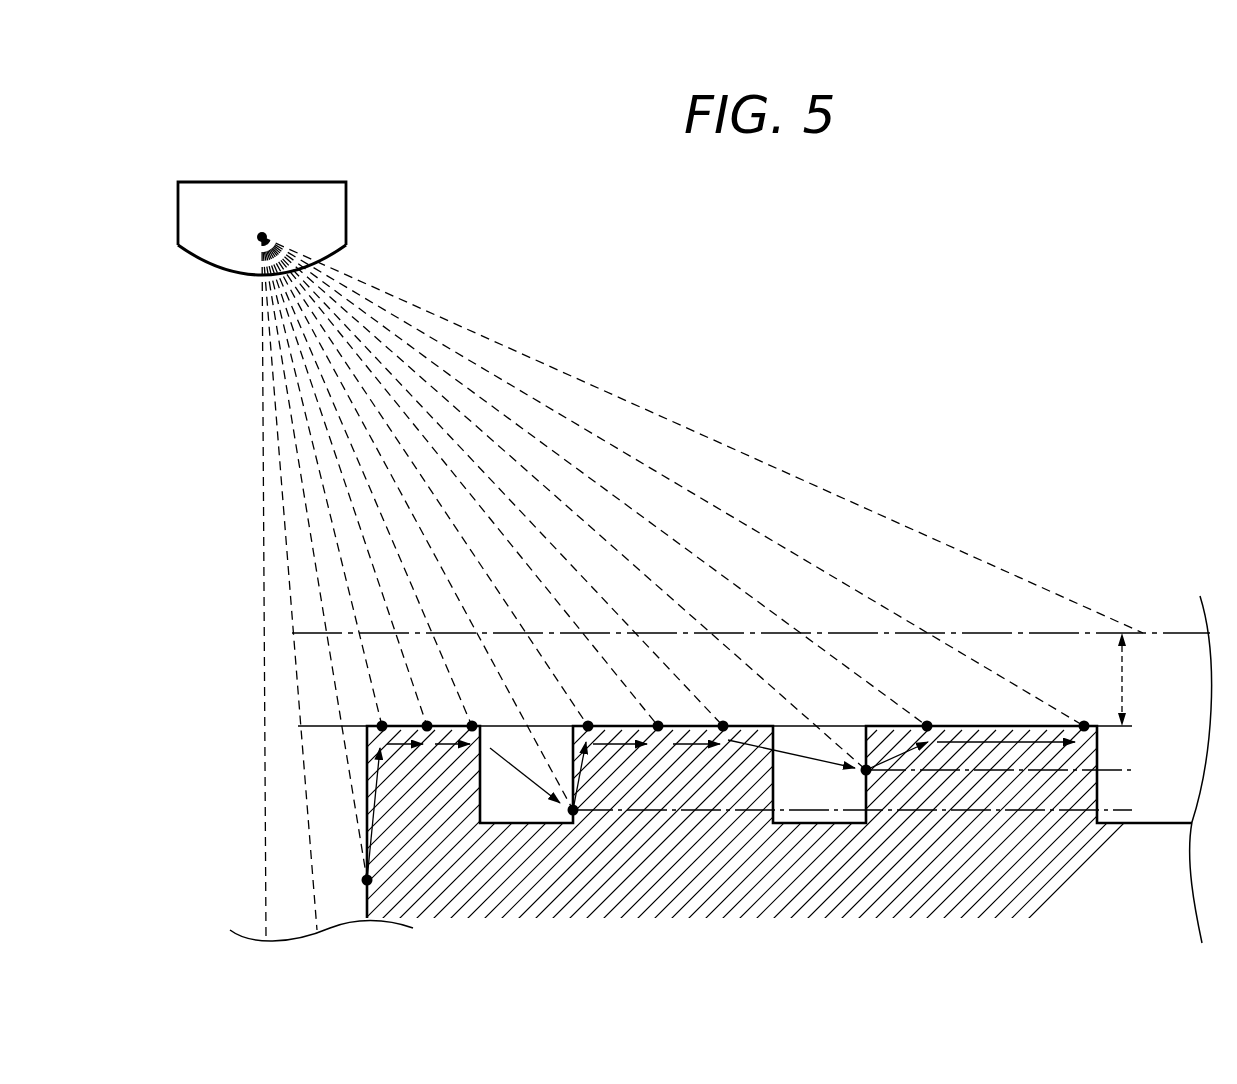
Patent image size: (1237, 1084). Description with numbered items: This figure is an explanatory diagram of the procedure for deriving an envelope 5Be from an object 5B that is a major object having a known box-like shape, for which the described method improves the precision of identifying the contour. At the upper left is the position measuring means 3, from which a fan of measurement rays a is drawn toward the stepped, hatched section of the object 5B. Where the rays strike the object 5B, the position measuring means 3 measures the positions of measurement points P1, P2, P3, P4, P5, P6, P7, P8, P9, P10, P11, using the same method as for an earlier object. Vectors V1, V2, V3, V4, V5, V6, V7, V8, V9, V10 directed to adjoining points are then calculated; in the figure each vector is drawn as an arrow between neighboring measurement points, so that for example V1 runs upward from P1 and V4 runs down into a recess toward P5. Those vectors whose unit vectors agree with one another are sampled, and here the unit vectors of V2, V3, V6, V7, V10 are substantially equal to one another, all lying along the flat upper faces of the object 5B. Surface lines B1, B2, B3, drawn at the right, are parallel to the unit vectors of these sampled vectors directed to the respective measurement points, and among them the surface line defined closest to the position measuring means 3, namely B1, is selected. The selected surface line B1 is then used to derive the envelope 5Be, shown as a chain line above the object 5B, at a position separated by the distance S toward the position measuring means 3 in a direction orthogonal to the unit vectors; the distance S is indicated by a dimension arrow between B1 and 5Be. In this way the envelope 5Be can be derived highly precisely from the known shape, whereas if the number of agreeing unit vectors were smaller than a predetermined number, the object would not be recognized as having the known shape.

The position measuring means 3 is at (348, 207).
The light beam / ray a is at (543, 362).
The object 5B is at (367, 782).
The envelope 5Be is at (1007, 633).
The distance S is at (1133, 679).
The surface line B1 is at (826, 719).
The surface line B2 is at (1019, 768).
The surface line B3 is at (872, 806).
The measurement point P1 is at (353, 881).
The measurement point P2 is at (394, 712).
The measurement point P3 is at (439, 712).
The measurement point P4 is at (483, 712).
The measurement point P5 is at (576, 834).
The measurement point P6 is at (595, 712).
The measurement point P7 is at (664, 712).
The measurement point P8 is at (729, 712).
The measurement point P9 is at (883, 784).
The measurement point P10 is at (942, 710).
The measurement point P11 is at (1090, 710).
The vector V1 is at (391, 821).
The vector V2 is at (405, 763).
The vector V3 is at (452, 763).
The vector V4 is at (525, 778).
The vector V5 is at (595, 776).
The vector V6 is at (620, 761).
The vector V7 is at (696, 761).
The vector V8 is at (791, 767).
The vector V9 is at (897, 751).
The vector V10 is at (1006, 757).